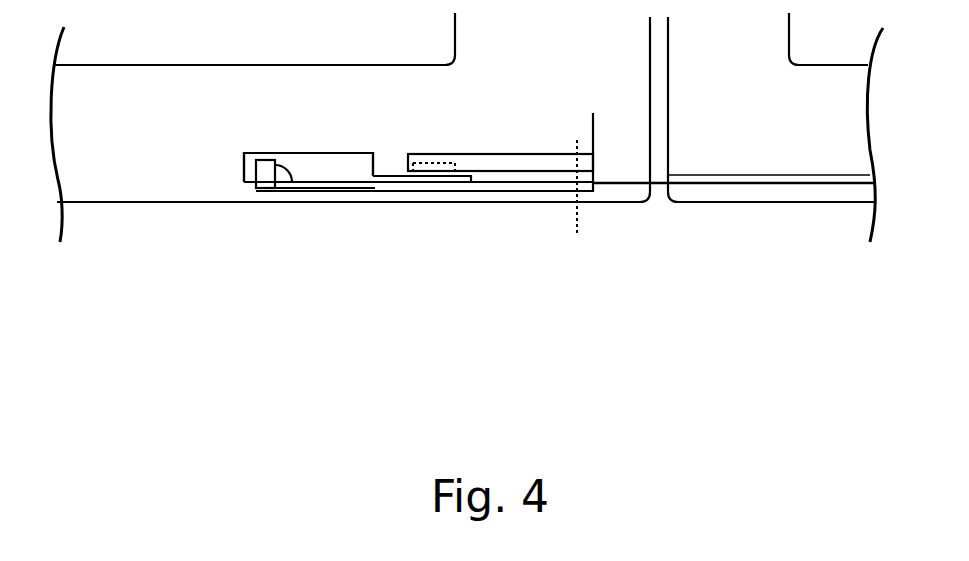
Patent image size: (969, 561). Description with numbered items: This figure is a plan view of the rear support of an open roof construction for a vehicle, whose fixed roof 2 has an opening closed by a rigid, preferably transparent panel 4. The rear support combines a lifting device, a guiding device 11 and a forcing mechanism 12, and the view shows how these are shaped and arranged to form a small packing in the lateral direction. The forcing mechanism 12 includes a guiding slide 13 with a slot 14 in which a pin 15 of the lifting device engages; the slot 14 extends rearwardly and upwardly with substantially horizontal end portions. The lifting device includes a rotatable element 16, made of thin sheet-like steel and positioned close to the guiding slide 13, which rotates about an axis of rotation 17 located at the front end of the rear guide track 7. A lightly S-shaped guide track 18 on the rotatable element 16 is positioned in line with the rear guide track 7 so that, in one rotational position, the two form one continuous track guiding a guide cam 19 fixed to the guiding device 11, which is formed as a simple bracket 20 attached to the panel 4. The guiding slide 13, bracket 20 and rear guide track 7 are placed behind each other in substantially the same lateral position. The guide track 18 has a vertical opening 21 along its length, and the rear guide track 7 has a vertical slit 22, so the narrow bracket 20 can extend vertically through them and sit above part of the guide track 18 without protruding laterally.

The fixed roof 2 is at (701, 59).
The panel 4 is at (569, 59).
The rear guide track 7 is at (822, 143).
The guiding device 11 is at (425, 191).
The forcing mechanism 12 is at (226, 164).
The guiding slide 13 is at (342, 168).
The slot 14 is at (292, 182).
The pin 15 is at (257, 189).
The rotatable element 16 is at (380, 182).
The axis of rotation 17 is at (577, 213).
The guide track 18 is at (503, 172).
The guide cam 19 is at (429, 154).
The bracket 20 is at (452, 182).
The vertical opening 21 is at (538, 174).
The slit 22 is at (710, 170).